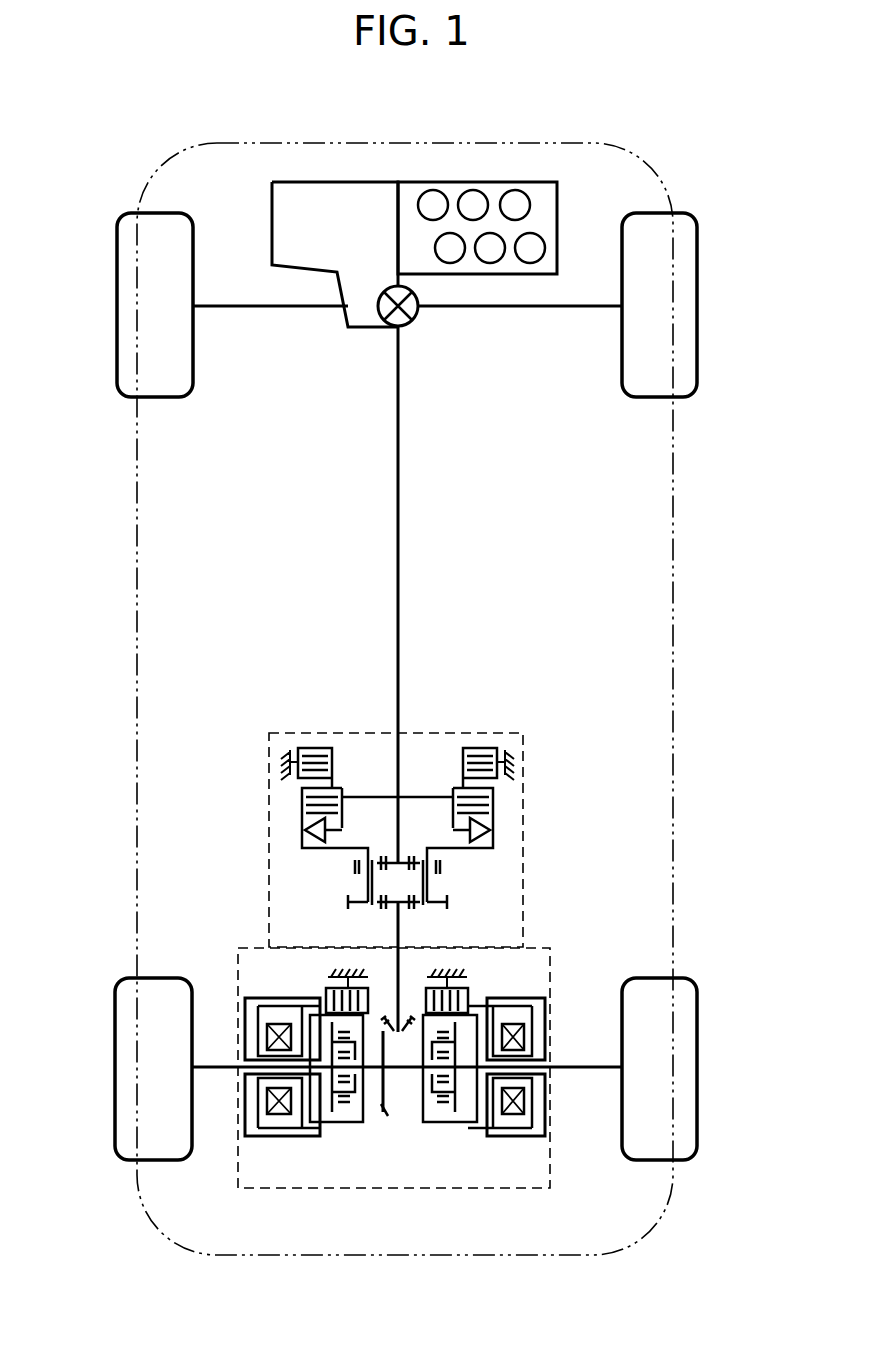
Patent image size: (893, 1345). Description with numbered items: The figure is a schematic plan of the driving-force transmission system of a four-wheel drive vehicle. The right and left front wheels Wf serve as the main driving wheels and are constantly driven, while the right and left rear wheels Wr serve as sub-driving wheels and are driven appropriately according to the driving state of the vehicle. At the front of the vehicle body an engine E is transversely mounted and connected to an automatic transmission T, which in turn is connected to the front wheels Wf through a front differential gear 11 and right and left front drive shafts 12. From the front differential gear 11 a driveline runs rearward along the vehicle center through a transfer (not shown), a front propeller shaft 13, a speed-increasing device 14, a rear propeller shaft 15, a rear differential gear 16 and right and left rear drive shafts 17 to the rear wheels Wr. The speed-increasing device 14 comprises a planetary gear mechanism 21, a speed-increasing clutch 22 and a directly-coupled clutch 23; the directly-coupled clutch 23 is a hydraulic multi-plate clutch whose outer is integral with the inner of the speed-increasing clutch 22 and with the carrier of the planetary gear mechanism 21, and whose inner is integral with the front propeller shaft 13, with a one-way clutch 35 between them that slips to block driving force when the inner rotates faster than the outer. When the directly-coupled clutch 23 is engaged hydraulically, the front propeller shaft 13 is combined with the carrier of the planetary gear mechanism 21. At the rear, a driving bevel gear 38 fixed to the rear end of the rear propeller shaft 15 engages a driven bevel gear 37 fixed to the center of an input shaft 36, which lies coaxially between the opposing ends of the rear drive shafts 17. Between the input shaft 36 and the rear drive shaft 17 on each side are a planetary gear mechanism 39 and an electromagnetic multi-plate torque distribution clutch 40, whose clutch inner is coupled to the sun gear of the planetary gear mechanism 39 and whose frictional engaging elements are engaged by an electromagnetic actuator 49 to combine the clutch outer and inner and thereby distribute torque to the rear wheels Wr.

The automatic transmission T is at (330, 182).
The engine E is at (493, 190).
The front wheels Wf is at (117, 268).
The rear wheels Wr is at (118, 1067).
The front differential gear 11 is at (417, 318).
The front drive shafts 12 is at (258, 310).
The front propeller shaft 13 is at (402, 548).
The speed-increasing device 14 is at (429, 805).
The rear propeller shaft 15 is at (402, 930).
The rear differential gear 16 is at (407, 1091).
The rear drive shafts 17 is at (212, 1072).
The planetary gear mechanism 21 is at (450, 882).
The speed-increasing clutch 22 is at (492, 740).
The directly-coupled clutch 23 is at (503, 812).
The one-way clutch 35 is at (315, 849).
The input shaft 36 is at (399, 1072).
The driven bevel gear 37 is at (387, 1116).
The driving bevel gear 38 is at (396, 1034).
The planetary gear mechanism 39 is at (315, 1127).
The torque distribution clutch 40 is at (308, 977).
The electromagnetic actuator 49 is at (266, 1150).